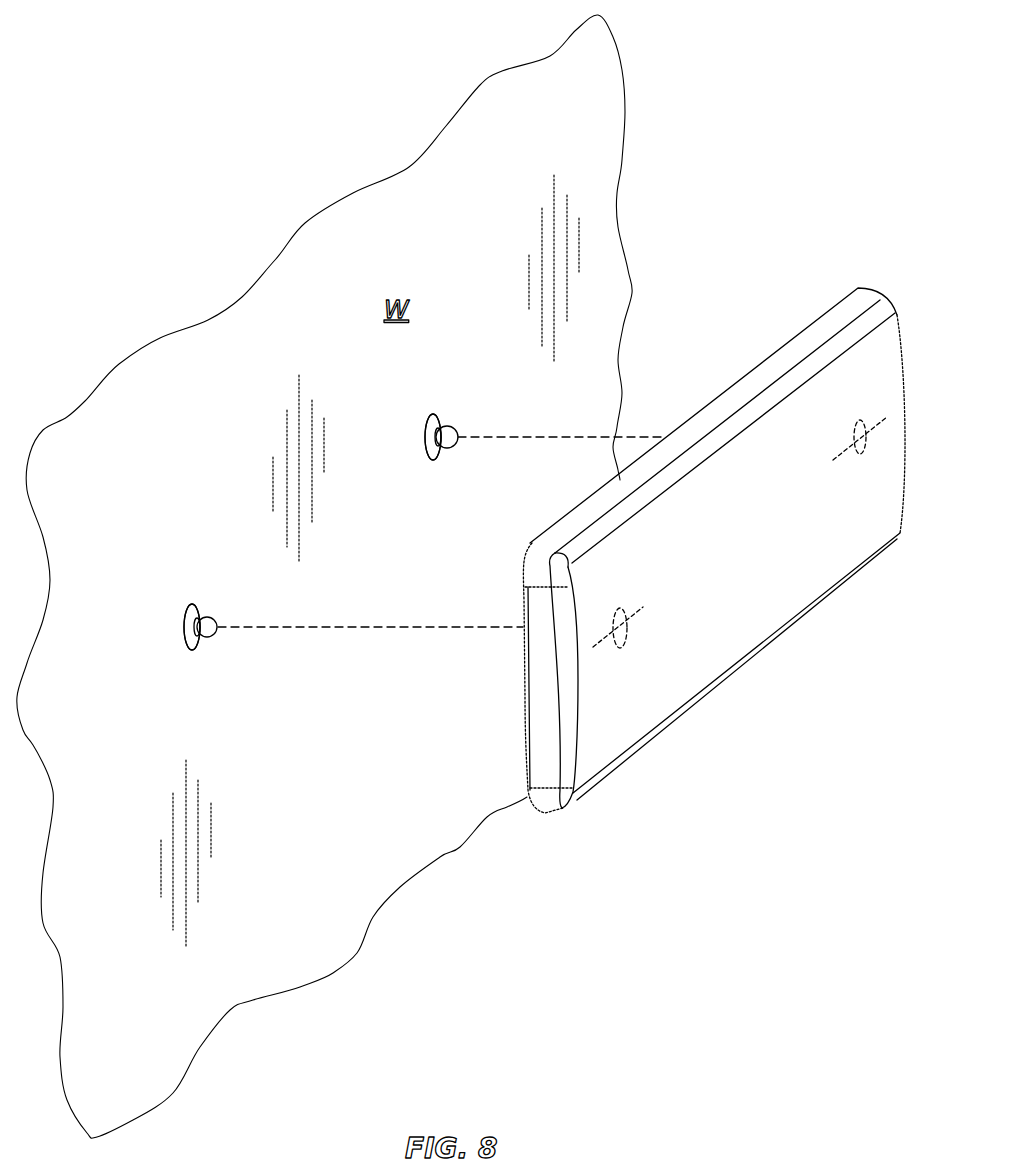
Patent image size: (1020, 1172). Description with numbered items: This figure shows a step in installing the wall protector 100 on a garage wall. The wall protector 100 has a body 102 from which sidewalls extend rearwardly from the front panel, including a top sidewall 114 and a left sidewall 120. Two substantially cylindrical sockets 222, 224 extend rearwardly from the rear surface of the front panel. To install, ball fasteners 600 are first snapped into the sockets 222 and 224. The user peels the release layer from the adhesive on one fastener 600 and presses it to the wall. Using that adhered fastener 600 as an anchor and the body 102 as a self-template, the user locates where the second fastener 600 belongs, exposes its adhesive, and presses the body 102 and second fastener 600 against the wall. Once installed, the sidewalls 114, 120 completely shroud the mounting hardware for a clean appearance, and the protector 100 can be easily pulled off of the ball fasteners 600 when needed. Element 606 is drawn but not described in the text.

The wall protector 100 is at (699, 537).
The body 102 is at (890, 483).
The top sidewall 114 is at (748, 380).
The left sidewall 120 is at (535, 703).
The socket 222 is at (860, 420).
The socket 224 is at (622, 648).
The ball fastener 600 is at (433, 413).
The mount base 606 is at (423, 450).